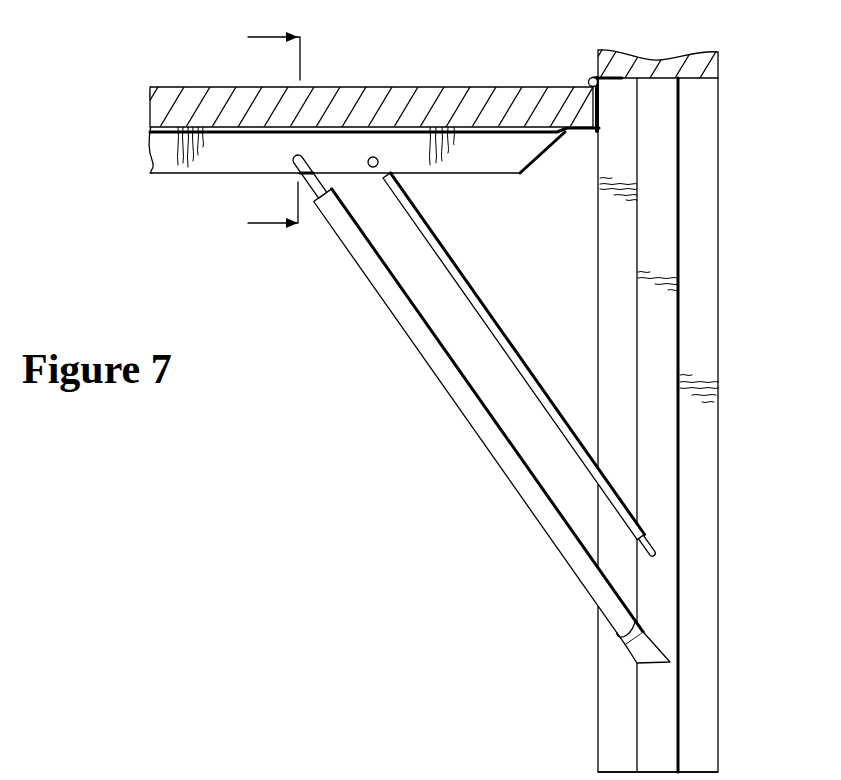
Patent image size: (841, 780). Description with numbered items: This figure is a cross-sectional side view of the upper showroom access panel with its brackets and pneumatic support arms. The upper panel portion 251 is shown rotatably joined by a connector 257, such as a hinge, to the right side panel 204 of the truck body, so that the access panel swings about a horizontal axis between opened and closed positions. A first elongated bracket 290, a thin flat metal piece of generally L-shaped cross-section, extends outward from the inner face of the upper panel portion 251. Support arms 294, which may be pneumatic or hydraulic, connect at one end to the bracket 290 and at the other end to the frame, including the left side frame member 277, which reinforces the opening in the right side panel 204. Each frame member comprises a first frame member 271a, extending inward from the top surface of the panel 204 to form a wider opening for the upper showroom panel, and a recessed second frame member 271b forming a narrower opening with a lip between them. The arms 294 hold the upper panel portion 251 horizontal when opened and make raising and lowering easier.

The right side panel 204 is at (722, 70).
The upper panel portion 251 is at (165, 88).
The connector 257 is at (583, 77).
The first frame member 271a is at (608, 267).
The second frame member 271b is at (650, 237).
The left side frame member 277 is at (645, 692).
The first elongated bracket 290 is at (187, 173).
The support arm 294 is at (475, 295).